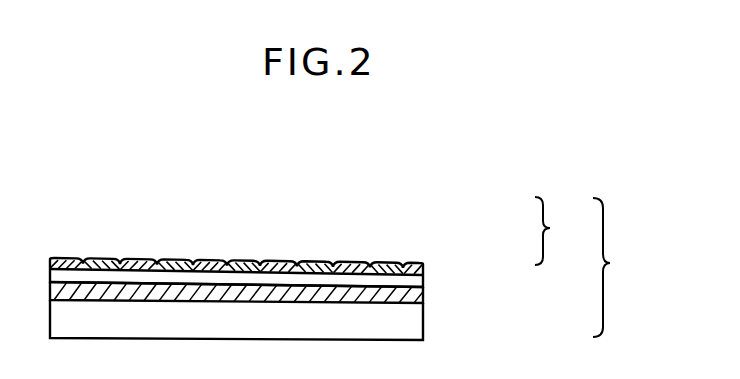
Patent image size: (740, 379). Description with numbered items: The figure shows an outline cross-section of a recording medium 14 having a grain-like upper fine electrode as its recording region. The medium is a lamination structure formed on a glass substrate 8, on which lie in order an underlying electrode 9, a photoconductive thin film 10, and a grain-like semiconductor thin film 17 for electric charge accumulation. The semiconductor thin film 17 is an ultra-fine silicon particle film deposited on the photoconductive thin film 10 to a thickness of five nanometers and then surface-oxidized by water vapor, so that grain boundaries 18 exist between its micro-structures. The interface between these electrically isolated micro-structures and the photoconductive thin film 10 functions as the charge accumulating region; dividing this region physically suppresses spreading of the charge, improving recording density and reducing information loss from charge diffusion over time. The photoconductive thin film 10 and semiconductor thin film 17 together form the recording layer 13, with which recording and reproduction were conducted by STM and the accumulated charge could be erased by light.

The glass substrate 8 is at (415, 328).
The underlying electrode 9 is at (418, 294).
The photoconductive thin film 10 is at (427, 279).
The recording layer 13 is at (561, 231).
The recording medium 14 is at (623, 267).
The grain-like semiconductor thin film 17 is at (363, 263).
The grain boundaries 18 is at (295, 262).